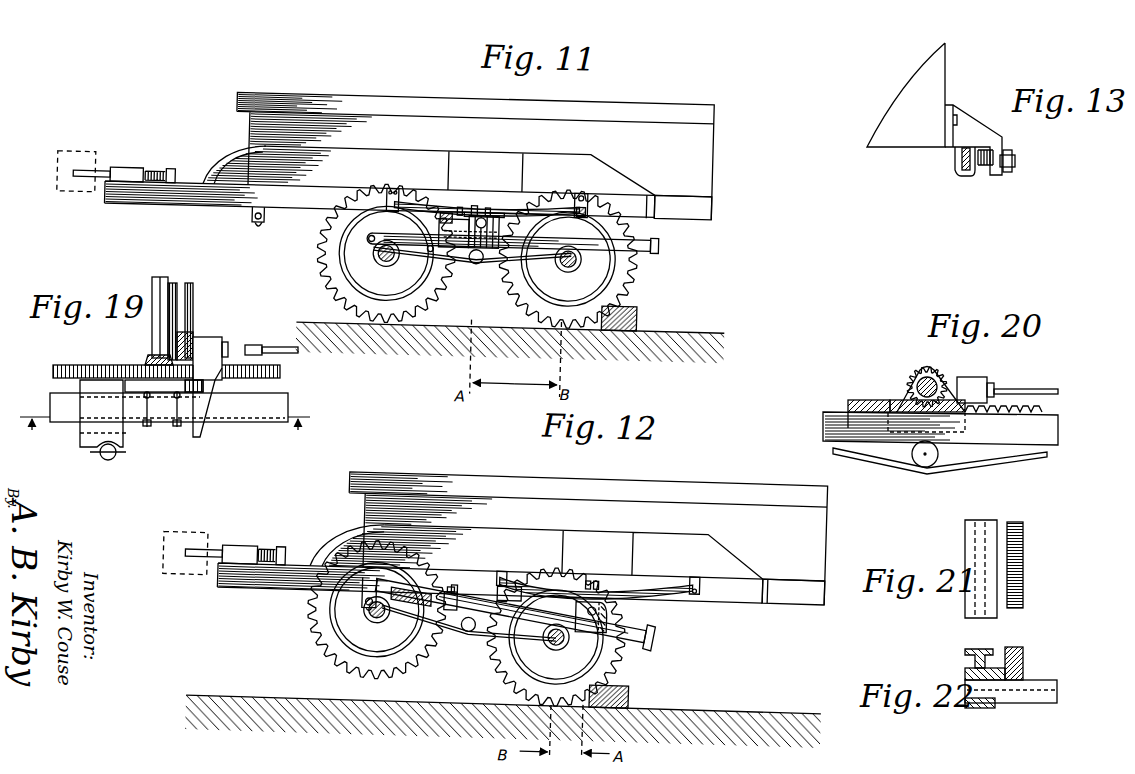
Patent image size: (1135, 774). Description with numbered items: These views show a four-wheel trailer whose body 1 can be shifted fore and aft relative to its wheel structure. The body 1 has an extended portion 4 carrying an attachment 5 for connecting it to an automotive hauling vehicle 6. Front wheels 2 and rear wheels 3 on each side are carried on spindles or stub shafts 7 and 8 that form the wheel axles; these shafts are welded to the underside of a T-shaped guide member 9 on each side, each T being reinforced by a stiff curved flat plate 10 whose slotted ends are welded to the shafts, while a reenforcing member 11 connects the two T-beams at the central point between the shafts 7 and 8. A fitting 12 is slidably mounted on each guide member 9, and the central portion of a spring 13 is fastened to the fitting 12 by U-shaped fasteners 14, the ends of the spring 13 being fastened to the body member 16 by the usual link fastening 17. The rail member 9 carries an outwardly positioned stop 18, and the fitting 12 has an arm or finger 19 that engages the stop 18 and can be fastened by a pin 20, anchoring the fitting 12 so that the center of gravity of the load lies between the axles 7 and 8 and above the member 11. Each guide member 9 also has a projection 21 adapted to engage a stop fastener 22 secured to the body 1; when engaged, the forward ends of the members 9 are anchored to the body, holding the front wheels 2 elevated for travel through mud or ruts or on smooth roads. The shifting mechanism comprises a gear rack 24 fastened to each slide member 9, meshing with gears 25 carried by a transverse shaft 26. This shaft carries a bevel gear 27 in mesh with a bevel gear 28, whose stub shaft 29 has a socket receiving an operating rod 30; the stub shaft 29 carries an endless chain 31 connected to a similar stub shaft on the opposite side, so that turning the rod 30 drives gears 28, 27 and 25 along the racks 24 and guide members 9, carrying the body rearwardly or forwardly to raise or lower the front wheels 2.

In FIG. 11, the body 1 is at (705, 160).
In FIG. 12, the body 1 is at (808, 530).
In FIG. 13, the body 1 is at (893, 118).
In FIG. 11, the front wheels 2 is at (322, 276).
In FIG. 12, the front wheels 2 is at (320, 636).
In FIG. 11, the rear wheels 3 is at (642, 268).
In FIG. 12, the rear wheels 3 is at (628, 648).
In FIG. 11, the extended portion 4 is at (190, 181).
In FIG. 12, the extended portion 4 is at (272, 588).
In FIG. 11, the attachment 5 is at (138, 172).
In FIG. 12, the attachment 5 is at (250, 540).
In FIG. 11, the automotive hauling vehicle 6 is at (94, 168).
In FIG. 12, the automotive hauling vehicle 6 is at (206, 539).
In FIG. 11, the stub shaft 7 is at (391, 256).
In FIG. 12, the stub shaft 7 is at (382, 614).
In FIG. 22, the stub shaft 7 is at (1030, 686).
In FIG. 11, the stub shaft 8 is at (575, 252).
In FIG. 12, the stub shaft 8 is at (558, 634).
In FIG. 11, the guide member 9 is at (661, 232).
In FIG. 12, the guide member 9 is at (652, 626).
In FIG. 19, the guide member 9 is at (280, 423).
In FIG. 20, the guide member 9 is at (823, 430).
In FIG. 21, the guide member 9 is at (968, 612).
In FIG. 22, the guide member 9 is at (966, 652).
In FIG. 12, the flat plate 10 is at (468, 635).
In FIG. 20, the flat plate 10 is at (860, 456).
In FIG. 11, the reenforcing member 11 is at (477, 255).
In FIG. 12, the reenforcing member 11 is at (470, 625).
In FIG. 20, the reenforcing member 11 is at (922, 468).
In FIG. 11, the fitting 12 is at (497, 212).
In FIG. 12, the fitting 12 is at (612, 598).
In FIG. 19, the fitting 12 is at (197, 437).
In FIG. 20, the fitting 12 is at (896, 402).
In FIG. 11, the spring 13 is at (456, 217).
In FIG. 12, the spring 13 is at (505, 579).
In FIG. 11, the U-shaped fastener 14 is at (488, 200).
In FIG. 12, the U-shaped fastener 14 is at (597, 572).
In FIG. 19, the U-shaped fastener 14 is at (177, 430).
In FIG. 11, the body member 16 is at (713, 195).
In FIG. 12, the body member 16 is at (792, 582).
In FIG. 11, the link fastening 17 is at (395, 184).
In FIG. 12, the link fastening 17 is at (503, 566).
In FIG. 11, the stop 18 is at (447, 204).
In FIG. 12, the stop 18 is at (446, 587).
In FIG. 19, the stop 18 is at (90, 442).
In FIG. 20, the stop 18 is at (860, 400).
In FIG. 11, the arm or finger 19 is at (431, 244).
In FIG. 12, the arm or finger 19 is at (590, 596).
In FIG. 19, the arm or finger 19 is at (110, 461).
In FIG. 11, the pin 20 is at (474, 198).
In FIG. 12, the pin 20 is at (456, 580).
In FIG. 19, the pin 20 is at (165, 435).
In FIG. 11, the projection 21 is at (374, 226).
In FIG. 12, the projection 21 is at (392, 581).
In FIG. 13, the projection 21 is at (980, 170).
In FIG. 11, the stop fastener 22 is at (255, 212).
In FIG. 12, the stop fastener 22 is at (362, 595).
In FIG. 13, the stop fastener 22 is at (958, 166).
In FIG. 19, the gear rack 24 is at (283, 373).
In FIG. 20, the gear rack 24 is at (1045, 411).
In FIG. 21, the gear rack 24 is at (1020, 524).
In FIG. 22, the gear rack 24 is at (1015, 650).
In FIG. 19, the gear 25 is at (147, 360).
In FIG. 20, the gear 25 is at (916, 366).
In FIG. 19, the transverse shaft 26 is at (157, 306).
In FIG. 20, the transverse shaft 26 is at (956, 388).
In FIG. 19, the bevel gear 27 is at (169, 315).
In FIG. 19, the bevel gear 28 is at (205, 343).
In FIG. 19, the stub shaft 29 is at (228, 348).
In FIG. 20, the stub shaft 29 is at (986, 388).
In FIG. 19, the operating rod 30 is at (262, 348).
In FIG. 20, the operating rod 30 is at (1036, 390).
In FIG. 19, the endless chain 31 is at (191, 312).